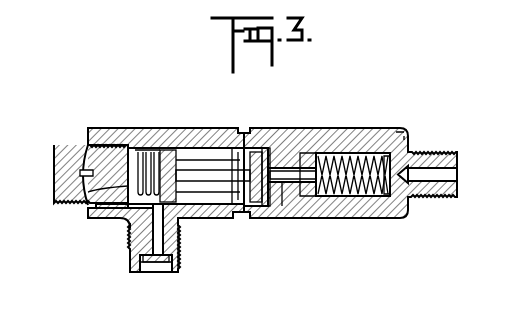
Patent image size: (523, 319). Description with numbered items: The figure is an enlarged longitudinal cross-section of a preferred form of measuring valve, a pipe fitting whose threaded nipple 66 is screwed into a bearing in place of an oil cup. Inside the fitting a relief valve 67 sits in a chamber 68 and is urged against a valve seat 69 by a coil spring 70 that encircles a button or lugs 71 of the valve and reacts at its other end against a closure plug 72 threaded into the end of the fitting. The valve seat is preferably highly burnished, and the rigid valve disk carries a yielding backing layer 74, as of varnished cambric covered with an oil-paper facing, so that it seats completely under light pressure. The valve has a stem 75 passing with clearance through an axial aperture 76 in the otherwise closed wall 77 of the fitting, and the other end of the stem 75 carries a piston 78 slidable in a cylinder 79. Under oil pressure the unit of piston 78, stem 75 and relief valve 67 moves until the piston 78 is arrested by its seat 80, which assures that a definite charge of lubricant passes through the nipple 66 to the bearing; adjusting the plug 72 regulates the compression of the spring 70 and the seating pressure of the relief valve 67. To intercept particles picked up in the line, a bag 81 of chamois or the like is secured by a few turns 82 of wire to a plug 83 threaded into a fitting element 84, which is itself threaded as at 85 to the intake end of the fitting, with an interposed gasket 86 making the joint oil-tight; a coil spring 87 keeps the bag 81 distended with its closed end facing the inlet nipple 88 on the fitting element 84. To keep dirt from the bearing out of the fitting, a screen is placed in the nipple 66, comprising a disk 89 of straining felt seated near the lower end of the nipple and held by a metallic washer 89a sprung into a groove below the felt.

The threaded nipple 66 is at (130, 229).
The relief valve 67 is at (170, 150).
The chamber 68 is at (148, 150).
The valve seat 69 is at (198, 170).
The coil spring 70 is at (96, 212).
The button or lugs 71 is at (88, 192).
The closure plug 72 is at (82, 160).
The yielding backing layer 74 is at (184, 216).
The stem 75 is at (244, 212).
The axial aperture 76 is at (238, 148).
The closed wall 77 is at (212, 214).
The piston 78 is at (272, 212).
The cylinder 79 is at (300, 153).
The seat 80 is at (205, 212).
The bag 81 is at (360, 136).
The turns of wire 82 is at (330, 158).
The plug 83 is at (318, 212).
The fitting element 84 is at (386, 136).
The threaded connection 85 is at (268, 148).
The gasket 86 is at (284, 212).
The coil spring 87 is at (372, 196).
The inlet nipple 88 is at (440, 190).
The disk of straining felt 89 is at (168, 266).
The metallic washer 89a is at (152, 264).